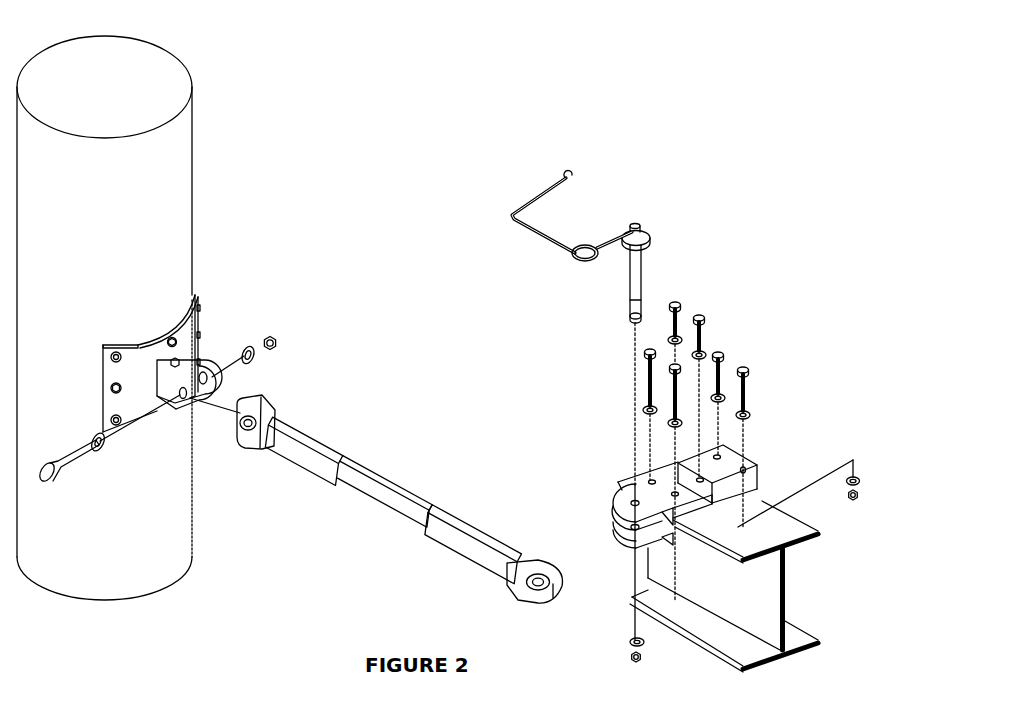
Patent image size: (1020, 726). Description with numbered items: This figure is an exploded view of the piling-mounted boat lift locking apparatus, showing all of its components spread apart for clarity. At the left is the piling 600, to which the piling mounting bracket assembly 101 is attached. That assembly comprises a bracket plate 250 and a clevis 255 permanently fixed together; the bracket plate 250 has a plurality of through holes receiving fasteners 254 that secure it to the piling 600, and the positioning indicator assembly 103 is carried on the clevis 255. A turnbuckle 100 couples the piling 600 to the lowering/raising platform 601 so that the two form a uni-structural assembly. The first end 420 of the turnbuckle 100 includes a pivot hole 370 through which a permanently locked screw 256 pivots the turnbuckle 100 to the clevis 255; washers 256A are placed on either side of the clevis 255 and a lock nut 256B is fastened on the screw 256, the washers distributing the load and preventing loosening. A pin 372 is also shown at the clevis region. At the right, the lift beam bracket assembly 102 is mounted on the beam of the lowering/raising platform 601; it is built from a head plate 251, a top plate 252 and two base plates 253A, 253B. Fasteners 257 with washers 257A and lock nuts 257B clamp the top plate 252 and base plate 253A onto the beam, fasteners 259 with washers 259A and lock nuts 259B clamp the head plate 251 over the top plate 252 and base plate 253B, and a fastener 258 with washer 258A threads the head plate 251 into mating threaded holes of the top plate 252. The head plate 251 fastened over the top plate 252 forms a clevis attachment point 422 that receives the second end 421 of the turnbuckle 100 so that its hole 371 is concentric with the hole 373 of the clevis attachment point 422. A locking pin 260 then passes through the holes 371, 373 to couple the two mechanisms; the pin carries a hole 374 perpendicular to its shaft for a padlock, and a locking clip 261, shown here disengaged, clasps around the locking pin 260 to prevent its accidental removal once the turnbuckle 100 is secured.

The piling 600 is at (187, 236).
The piling mounting bracket assembly 101 is at (142, 341).
The positioning indicator assembly 103 is at (180, 352).
The bracket plate 250 is at (113, 368).
The fasteners 254 is at (112, 389).
The clevis 255 is at (203, 361).
The pin 372 is at (180, 396).
The permanently locked screw 256 is at (63, 459).
The washers 256A is at (93, 437).
The lock nut 256B is at (277, 344).
The first end 420 is at (263, 404).
The pivot hole 370 is at (245, 425).
The turnbuckle 100 is at (417, 497).
The second end 421 is at (541, 566).
The hole 371 is at (532, 585).
The clevis attachment point 422 is at (614, 497).
The hole 373 is at (614, 513).
The head plate 251 is at (664, 478).
The lift beam bracket assembly 102 is at (733, 455).
The top plate 252 is at (735, 488).
The base plate 253A is at (762, 487).
The base plate 253B is at (681, 538).
The lowering/raising platform 601 is at (795, 521).
The fastener 258 is at (681, 304).
The washer 258A is at (682, 340).
The fasteners 259 is at (671, 383).
The washers 259A is at (668, 424).
The lock nut 259B is at (642, 657).
The fasteners 257 is at (724, 353).
The washers 257A is at (725, 397).
The lock nut 257B is at (860, 494).
The locking pin 260 is at (628, 283).
The hole 374 is at (642, 303).
The locking clip 261 is at (533, 238).